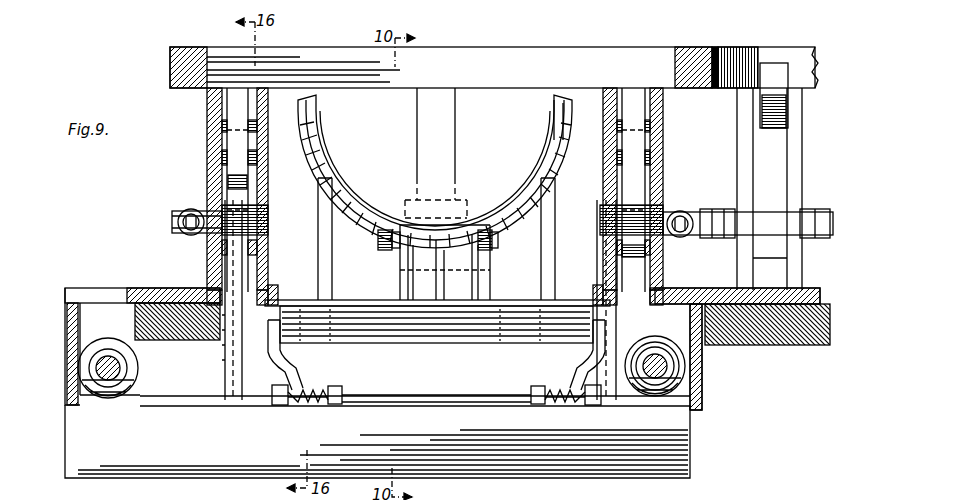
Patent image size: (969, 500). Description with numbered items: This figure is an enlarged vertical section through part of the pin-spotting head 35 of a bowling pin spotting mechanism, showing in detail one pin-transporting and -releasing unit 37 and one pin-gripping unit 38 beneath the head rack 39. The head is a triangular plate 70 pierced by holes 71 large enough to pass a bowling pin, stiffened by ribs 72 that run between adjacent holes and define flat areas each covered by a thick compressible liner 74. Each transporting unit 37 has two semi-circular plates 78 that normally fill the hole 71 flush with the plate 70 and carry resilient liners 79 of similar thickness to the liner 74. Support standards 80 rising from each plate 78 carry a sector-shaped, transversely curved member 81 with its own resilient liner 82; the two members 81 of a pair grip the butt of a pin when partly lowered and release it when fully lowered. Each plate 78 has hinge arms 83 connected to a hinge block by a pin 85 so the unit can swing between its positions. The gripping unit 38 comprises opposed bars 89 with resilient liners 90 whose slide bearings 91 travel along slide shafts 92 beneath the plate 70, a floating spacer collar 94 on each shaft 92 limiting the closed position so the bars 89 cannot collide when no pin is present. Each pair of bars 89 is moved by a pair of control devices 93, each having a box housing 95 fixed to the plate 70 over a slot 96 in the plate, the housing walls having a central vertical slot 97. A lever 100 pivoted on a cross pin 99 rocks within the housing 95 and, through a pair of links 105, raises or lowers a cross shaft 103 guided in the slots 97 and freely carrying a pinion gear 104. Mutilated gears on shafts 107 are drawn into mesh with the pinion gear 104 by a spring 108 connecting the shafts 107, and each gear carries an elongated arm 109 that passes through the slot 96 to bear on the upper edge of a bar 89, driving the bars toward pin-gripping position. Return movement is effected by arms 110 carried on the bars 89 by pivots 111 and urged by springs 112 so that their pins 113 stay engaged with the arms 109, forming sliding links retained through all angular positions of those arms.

The pin-spotting head 35 is at (90, 287).
The pin-transporting and -releasing unit 37 is at (533, 130).
The pin-gripping unit 38 is at (170, 477).
The head rack 39 is at (672, 46).
The plate 70 is at (150, 286).
The hole 71 is at (273, 290).
The rib 72 is at (68, 404).
The liner 74 is at (155, 340).
The semi-circular plate 78 is at (504, 296).
The resilient liner 79 is at (460, 343).
The support standard 80 is at (330, 260).
The sector-shaped member 81 is at (558, 183).
The resilient liner 82 is at (400, 148).
The hinge arm 83 is at (392, 278).
The pin 85 is at (492, 250).
The bar 89 is at (690, 478).
The resilient liner 90 is at (480, 463).
The slide bearing 91 is at (685, 364).
The slide shaft 92 is at (110, 355).
The control device 93 is at (207, 132).
The floating spacer collar 94 is at (116, 398).
The box housing 95 is at (218, 270).
The slot 96 is at (215, 282).
The central vertical slot 97 is at (262, 248).
The cross pin 99 is at (222, 155).
The lever 100 is at (247, 118).
The cross shaft 103 is at (260, 215).
The pinion gear 104 is at (232, 205).
The link 105 is at (250, 162).
The shaft 107 is at (178, 228).
The spring 108 is at (178, 215).
The elongated arm 109 is at (236, 398).
The arm 110 is at (290, 358).
The pivot 111 is at (352, 393).
The spring 112 is at (304, 408).
The pin 113 is at (224, 352).